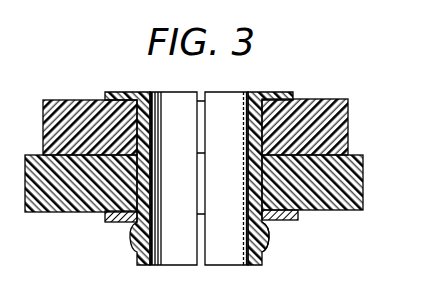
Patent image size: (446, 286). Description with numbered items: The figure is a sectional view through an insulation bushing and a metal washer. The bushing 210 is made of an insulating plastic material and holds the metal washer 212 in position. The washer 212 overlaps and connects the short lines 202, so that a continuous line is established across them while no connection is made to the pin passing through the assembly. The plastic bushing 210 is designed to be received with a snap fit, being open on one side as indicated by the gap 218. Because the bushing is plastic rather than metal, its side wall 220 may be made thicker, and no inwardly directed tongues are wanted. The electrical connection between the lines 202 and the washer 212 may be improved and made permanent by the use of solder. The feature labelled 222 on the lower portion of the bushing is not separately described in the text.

The wall panel 202 is at (57, 213).
The second nut 210 is at (241, 98).
The washer 212 is at (120, 224).
The tube 218 is at (204, 93).
The first nut 220 is at (179, 76).
The lip of nut 222 is at (268, 243).